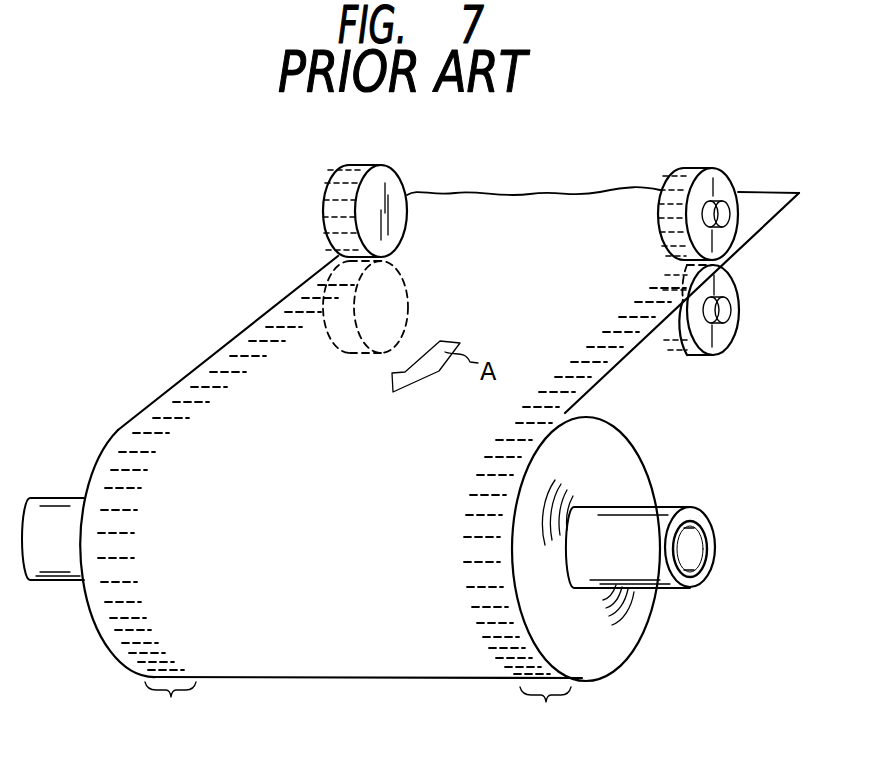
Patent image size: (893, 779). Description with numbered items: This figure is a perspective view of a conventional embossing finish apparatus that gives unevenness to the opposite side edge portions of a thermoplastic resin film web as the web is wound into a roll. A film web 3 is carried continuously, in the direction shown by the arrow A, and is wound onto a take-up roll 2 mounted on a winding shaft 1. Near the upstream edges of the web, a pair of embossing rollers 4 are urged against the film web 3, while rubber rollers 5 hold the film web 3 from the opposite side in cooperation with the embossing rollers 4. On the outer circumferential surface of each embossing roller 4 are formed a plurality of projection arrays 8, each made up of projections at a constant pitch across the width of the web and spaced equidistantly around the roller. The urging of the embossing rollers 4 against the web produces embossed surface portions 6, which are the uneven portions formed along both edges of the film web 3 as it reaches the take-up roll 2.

The winding shaft 1 is at (665, 586).
The take-up roll 2 is at (603, 663).
The film web 3 is at (485, 202).
The embossing rollers 4 is at (350, 165).
The rubber rollers 5 is at (397, 303).
The embossed surface portions 6 is at (358, 706).
The projection arrays 8 is at (334, 186).